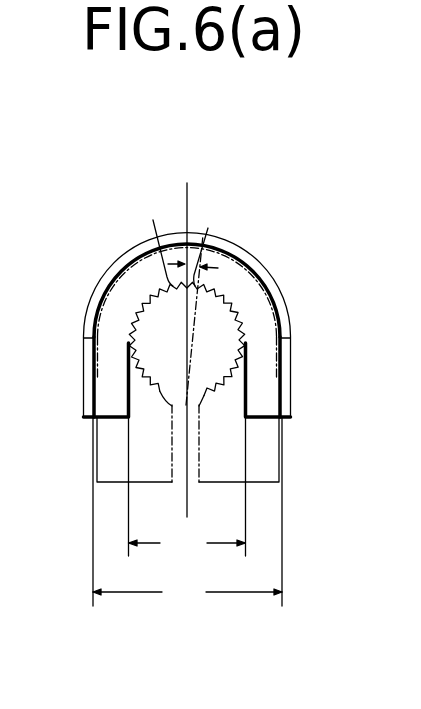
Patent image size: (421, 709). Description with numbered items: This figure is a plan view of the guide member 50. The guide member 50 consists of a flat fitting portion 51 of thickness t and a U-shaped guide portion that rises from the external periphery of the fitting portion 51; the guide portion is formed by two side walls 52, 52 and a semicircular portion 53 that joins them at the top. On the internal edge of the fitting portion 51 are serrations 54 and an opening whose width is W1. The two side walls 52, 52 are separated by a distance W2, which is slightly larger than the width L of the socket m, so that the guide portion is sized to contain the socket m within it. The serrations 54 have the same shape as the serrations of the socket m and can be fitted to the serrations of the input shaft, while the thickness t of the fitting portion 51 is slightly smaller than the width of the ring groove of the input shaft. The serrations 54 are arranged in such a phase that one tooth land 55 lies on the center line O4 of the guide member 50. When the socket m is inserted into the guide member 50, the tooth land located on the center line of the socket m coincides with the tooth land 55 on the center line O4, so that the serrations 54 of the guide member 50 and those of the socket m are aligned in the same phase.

The guide member 50 is at (186, 346).
The fitting portion 51 is at (263, 373).
The side walls 52 is at (83, 373).
The semicircular portion 53 is at (125, 259).
The serrations 54 is at (146, 303).
The tooth land 55 is at (165, 238).
The center line O4 is at (187, 195).
The socket m is at (245, 287).
The width of the opening W1 is at (187, 491).
The distance between the side walls W2 is at (187, 514).